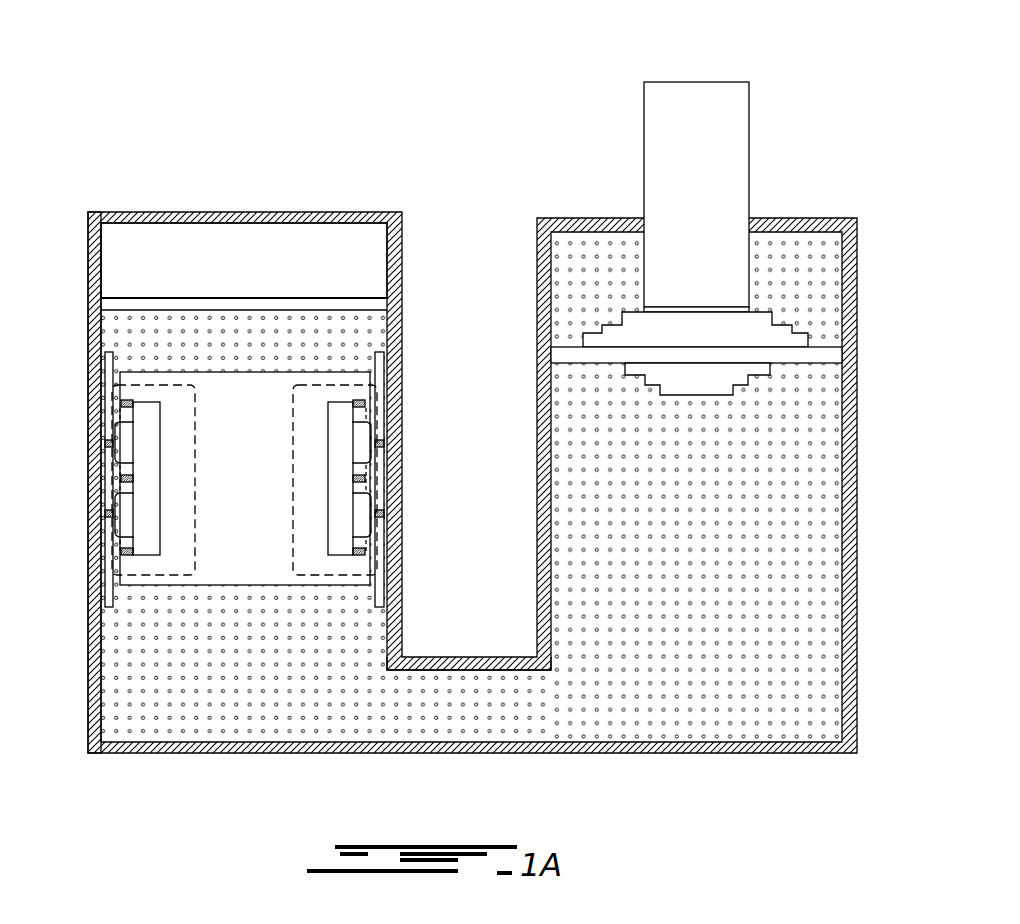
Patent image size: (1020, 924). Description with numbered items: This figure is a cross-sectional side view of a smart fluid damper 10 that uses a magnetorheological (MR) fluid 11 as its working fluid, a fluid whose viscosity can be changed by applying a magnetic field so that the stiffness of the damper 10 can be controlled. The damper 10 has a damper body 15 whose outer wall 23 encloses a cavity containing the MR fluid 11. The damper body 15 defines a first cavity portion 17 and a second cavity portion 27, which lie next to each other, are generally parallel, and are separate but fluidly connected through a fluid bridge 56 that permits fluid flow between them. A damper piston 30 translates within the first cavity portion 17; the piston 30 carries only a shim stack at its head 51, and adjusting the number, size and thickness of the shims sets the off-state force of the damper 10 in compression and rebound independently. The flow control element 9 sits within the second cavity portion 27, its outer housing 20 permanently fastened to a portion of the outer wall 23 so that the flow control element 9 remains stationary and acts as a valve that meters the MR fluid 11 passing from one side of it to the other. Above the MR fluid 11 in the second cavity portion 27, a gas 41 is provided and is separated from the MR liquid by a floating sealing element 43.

The damper 10 is at (793, 172).
The floating sealing element 43 is at (167, 298).
The gas 41 is at (318, 258).
The flow control element 9 is at (175, 370).
The outer housing 20 is at (103, 390).
The damper piston 30 is at (752, 305).
The head 51 is at (783, 340).
The damper body 15 is at (857, 497).
The first cavity portion 17 is at (724, 552).
The fluid bridge 56 is at (470, 657).
The second cavity portion 27 is at (258, 674).
The MR fluid 11 is at (602, 701).
The outer wall 23 is at (88, 632).